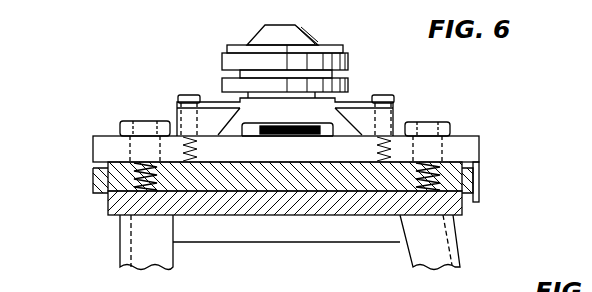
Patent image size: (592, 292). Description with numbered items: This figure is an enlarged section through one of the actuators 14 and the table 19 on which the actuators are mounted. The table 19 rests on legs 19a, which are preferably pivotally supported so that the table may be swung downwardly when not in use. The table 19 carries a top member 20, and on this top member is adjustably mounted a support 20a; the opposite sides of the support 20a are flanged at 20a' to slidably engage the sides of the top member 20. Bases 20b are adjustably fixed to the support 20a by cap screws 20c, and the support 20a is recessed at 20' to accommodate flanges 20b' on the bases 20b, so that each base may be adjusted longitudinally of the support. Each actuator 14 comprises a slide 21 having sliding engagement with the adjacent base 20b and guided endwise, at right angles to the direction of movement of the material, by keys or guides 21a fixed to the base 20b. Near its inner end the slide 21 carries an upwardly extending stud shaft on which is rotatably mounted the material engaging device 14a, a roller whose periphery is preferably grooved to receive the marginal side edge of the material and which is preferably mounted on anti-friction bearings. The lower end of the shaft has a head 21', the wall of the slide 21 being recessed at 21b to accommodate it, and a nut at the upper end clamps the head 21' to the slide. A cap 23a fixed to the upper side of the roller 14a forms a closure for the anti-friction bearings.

The actuator 14 is at (292, 59).
The material engaging device 14a is at (232, 63).
The cap 23a is at (318, 38).
The slide 21 is at (279, 113).
The keys or guides 21a is at (395, 108).
The recess 21b is at (284, 109).
The head 21' is at (283, 146).
The top member 20 is at (313, 218).
The recess 20' is at (507, 178).
The support 20a is at (317, 231).
The flanges 20a' is at (500, 211).
The base 20b is at (308, 161).
The flanges 20b' is at (498, 174).
The cap screws 20c is at (145, 121).
The table 19 is at (75, 184).
The legs 19a is at (172, 262).